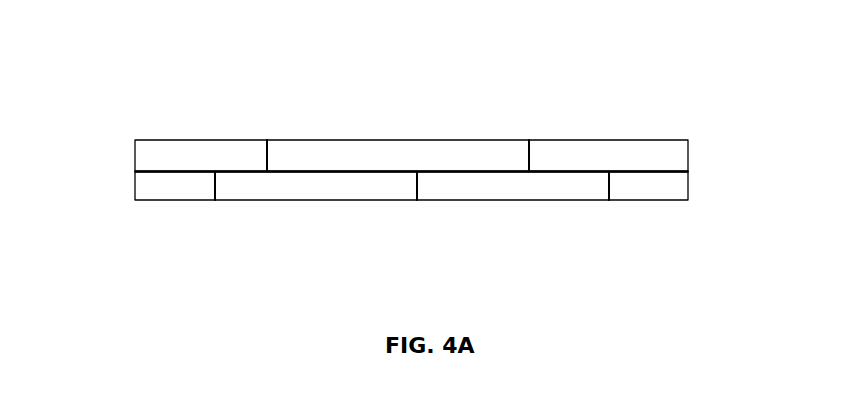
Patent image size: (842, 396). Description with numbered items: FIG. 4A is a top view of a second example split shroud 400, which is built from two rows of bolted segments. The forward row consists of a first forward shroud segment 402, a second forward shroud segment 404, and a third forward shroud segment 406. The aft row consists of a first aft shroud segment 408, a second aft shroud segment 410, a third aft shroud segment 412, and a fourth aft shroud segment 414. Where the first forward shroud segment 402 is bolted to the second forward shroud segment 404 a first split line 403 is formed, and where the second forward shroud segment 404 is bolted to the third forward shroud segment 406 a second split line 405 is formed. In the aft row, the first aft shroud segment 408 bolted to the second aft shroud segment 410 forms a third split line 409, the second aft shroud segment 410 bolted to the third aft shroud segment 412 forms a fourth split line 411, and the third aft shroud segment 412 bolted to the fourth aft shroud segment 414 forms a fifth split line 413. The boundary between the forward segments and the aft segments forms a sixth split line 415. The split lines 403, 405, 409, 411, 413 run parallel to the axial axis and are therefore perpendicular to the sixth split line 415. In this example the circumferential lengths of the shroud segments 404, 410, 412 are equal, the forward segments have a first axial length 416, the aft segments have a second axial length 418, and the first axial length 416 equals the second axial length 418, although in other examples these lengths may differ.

The second split shroud 400 is at (121, 50).
The first forward shroud segment 402 is at (197, 140).
The first split line 403 is at (252, 140).
The second forward shroud segment 404 is at (434, 140).
The second split line 405 is at (514, 140).
The third forward shroud segment 406 is at (675, 140).
The first aft shroud segment 408 is at (178, 201).
The third split line 409 is at (219, 201).
The second aft shroud segment 410 is at (380, 201).
The fourth split line 411 is at (420, 201).
The third aft shroud segment 412 is at (565, 201).
The fifth split line 413 is at (612, 201).
The fourth aft shroud segment 414 is at (645, 202).
The sixth split line 415 is at (158, 172).
The first axial length 416 is at (440, 111).
The second axial length 418 is at (432, 233).